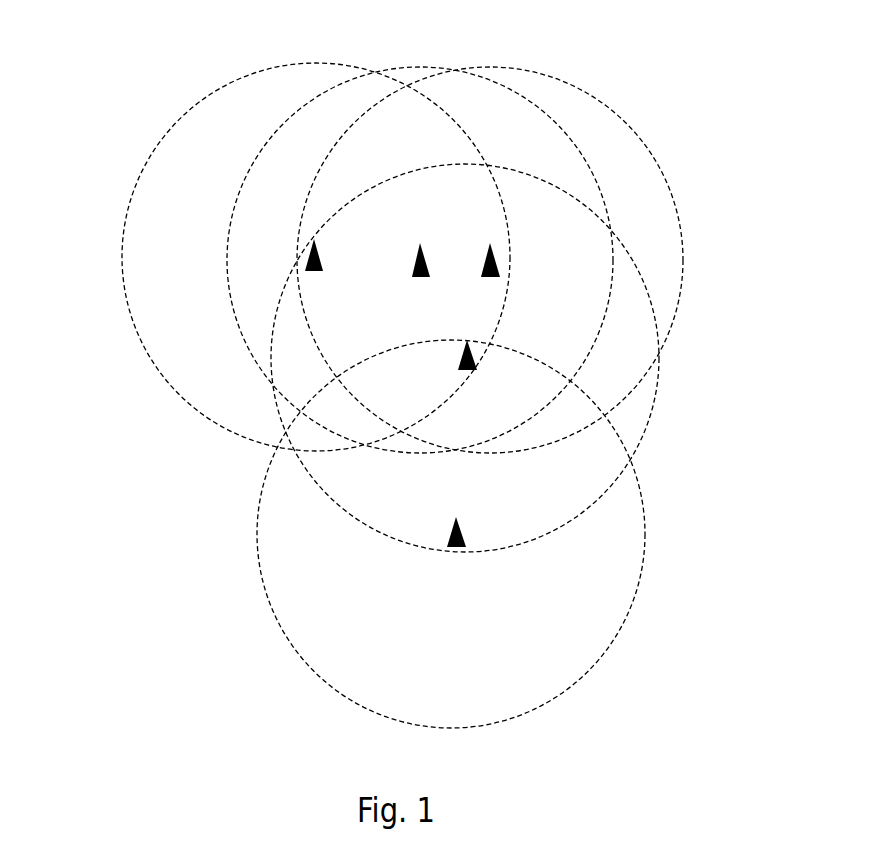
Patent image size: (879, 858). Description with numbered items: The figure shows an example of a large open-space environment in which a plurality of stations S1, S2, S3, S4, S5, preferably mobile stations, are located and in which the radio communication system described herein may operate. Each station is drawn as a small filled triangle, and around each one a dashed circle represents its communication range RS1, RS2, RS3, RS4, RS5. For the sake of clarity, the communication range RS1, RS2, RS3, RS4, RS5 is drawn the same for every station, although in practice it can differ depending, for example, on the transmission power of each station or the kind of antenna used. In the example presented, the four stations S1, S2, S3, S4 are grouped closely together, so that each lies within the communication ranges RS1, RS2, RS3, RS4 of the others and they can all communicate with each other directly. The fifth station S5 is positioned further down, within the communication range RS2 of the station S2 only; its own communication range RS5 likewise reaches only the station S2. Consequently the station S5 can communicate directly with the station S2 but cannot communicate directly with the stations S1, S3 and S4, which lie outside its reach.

The station S1 is at (305, 258).
The station S2 is at (458, 360).
The station S3 is at (497, 265).
The station S4 is at (425, 262).
The station S5 is at (450, 535).
The communication range RS1 is at (233, 80).
The communication range RS2 is at (280, 411).
The communication range RS3 is at (685, 292).
The communication range RS4 is at (590, 175).
The communication range RS5 is at (257, 552).